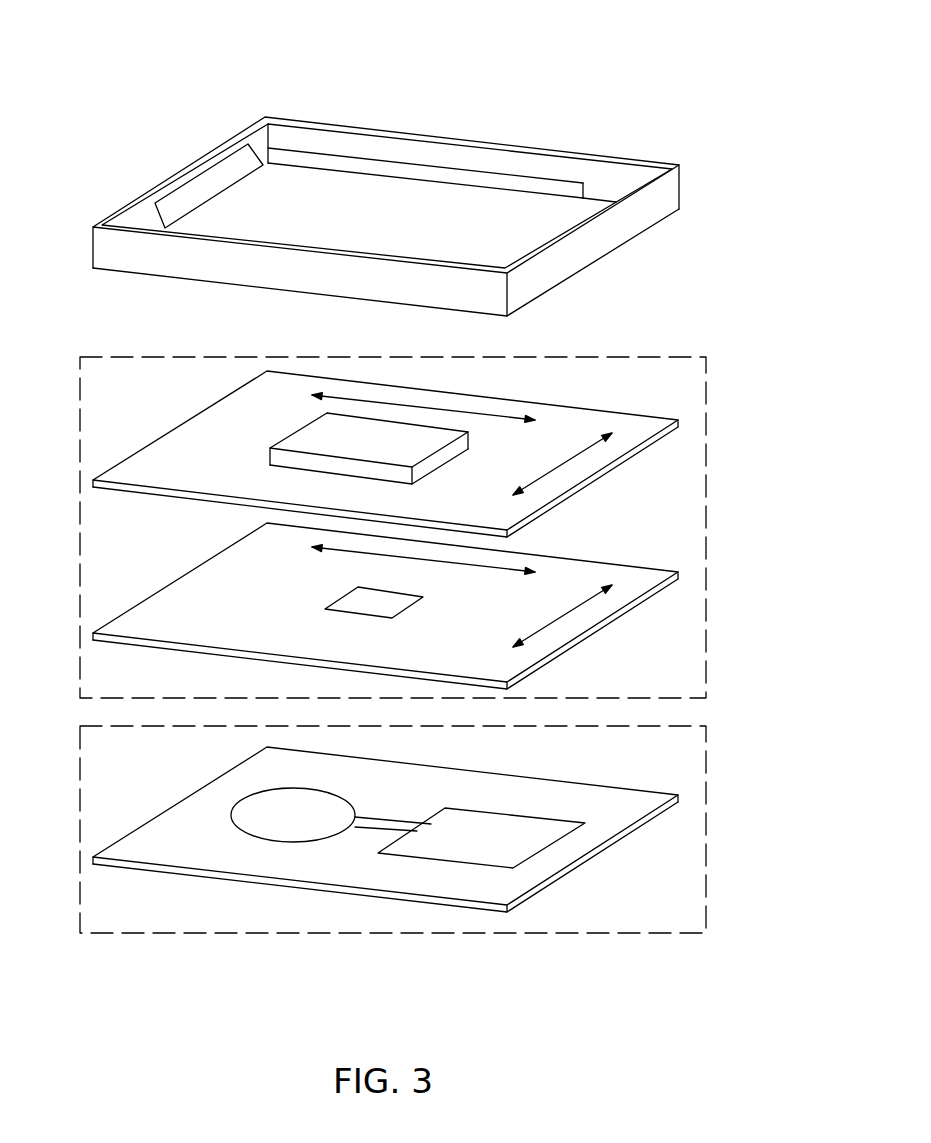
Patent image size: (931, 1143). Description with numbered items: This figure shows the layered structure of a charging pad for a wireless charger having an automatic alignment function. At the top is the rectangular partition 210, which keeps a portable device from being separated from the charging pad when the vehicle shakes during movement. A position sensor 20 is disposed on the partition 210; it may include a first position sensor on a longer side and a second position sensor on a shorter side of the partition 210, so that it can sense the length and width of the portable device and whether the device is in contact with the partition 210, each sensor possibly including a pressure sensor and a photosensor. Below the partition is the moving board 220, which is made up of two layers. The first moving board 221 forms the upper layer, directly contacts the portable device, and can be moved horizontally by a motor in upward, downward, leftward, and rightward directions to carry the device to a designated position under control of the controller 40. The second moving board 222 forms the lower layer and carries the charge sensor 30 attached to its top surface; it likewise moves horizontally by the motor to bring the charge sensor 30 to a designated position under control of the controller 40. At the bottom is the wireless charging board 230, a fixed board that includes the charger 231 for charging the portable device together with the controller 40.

The position sensor 20 is at (381, 168).
The partition 210 is at (679, 197).
The moving board 220 is at (706, 368).
The first moving board 221 is at (678, 420).
The second moving board 222 is at (678, 572).
The charge sensor 30 is at (333, 600).
The wireless charging board 230 is at (707, 776).
The charger 231 is at (292, 843).
The controller 40 is at (548, 846).